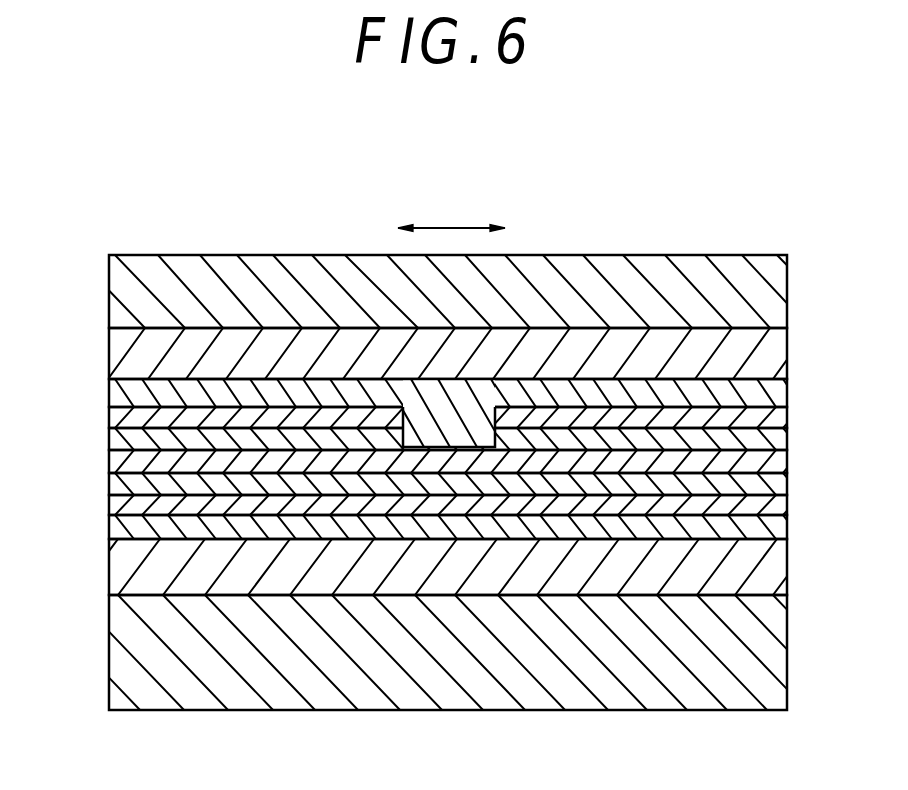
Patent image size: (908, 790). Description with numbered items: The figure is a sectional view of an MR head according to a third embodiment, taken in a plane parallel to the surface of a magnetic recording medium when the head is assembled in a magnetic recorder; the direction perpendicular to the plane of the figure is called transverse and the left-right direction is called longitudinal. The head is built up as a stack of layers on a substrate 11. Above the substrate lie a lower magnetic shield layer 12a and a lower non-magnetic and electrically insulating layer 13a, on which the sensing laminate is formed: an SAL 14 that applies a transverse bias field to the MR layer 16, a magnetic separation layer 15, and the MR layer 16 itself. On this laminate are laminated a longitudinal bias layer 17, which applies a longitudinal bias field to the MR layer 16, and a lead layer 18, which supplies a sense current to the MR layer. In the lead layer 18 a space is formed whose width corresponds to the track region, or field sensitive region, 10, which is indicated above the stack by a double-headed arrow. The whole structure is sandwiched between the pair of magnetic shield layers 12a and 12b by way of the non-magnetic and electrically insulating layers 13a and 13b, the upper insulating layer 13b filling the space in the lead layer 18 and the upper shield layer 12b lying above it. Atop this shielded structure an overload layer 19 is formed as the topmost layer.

The track region 10 is at (460, 228).
The substrate 11 is at (772, 660).
The magnetic shield layer 12a is at (777, 562).
The magnetic shield layer 12b is at (772, 345).
The non-magnetic and electrically insulating layer 13a is at (787, 522).
The non-magnetic and electrically insulating layer 13b is at (775, 393).
The SAL 14 is at (108, 503).
The magnetic separation layer 15 is at (108, 483).
The MR layer 16 is at (108, 461).
The longitudinal bias layer 17 is at (108, 440).
The lead layer 18 is at (108, 415).
The overload layer 19 is at (775, 278).